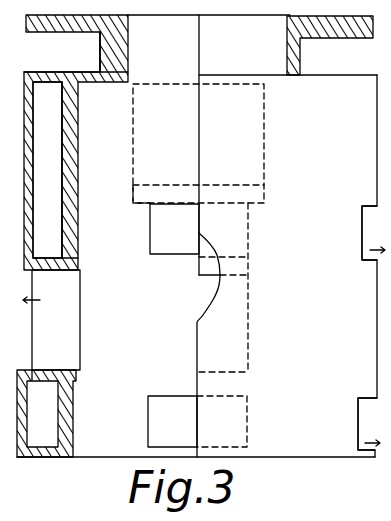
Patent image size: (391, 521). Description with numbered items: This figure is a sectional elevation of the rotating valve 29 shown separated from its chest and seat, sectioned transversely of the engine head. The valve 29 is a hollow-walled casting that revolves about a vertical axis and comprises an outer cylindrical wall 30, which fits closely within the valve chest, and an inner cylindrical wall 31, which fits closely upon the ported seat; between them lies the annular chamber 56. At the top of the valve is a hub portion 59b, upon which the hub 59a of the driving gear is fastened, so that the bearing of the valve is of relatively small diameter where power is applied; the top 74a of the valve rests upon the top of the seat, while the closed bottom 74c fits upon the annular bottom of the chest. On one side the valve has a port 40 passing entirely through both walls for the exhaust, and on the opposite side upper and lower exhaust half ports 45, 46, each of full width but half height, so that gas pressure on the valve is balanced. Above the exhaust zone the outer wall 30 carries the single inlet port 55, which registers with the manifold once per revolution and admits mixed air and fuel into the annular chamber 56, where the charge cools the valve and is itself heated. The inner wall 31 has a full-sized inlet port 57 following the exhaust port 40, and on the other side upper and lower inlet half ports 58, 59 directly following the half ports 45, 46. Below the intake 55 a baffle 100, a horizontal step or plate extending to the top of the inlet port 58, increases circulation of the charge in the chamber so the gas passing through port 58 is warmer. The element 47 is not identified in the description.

The valve 29 is at (333, 468).
The outer cylindrical wall 30 is at (33, 192).
The inner cylindrical wall 31 is at (78, 182).
The port 40 is at (51, 325).
The upper half port 45 is at (362, 228).
The lower half port 46 is at (358, 415).
The flange 47 is at (312, 39).
The inlet port 55 is at (133, 150).
The annular chamber 56 is at (47, 170).
The inlet port 57 is at (206, 277).
The upper inlet half port 58 is at (150, 247).
The lower inlet half port 59 is at (172, 397).
The hub of the gear 59a is at (100, 57).
The hub portion 59b is at (128, 43).
The top of the valve 74a is at (43, 71).
The closed bottom 74c is at (44, 445).
The baffle 100 is at (138, 204).